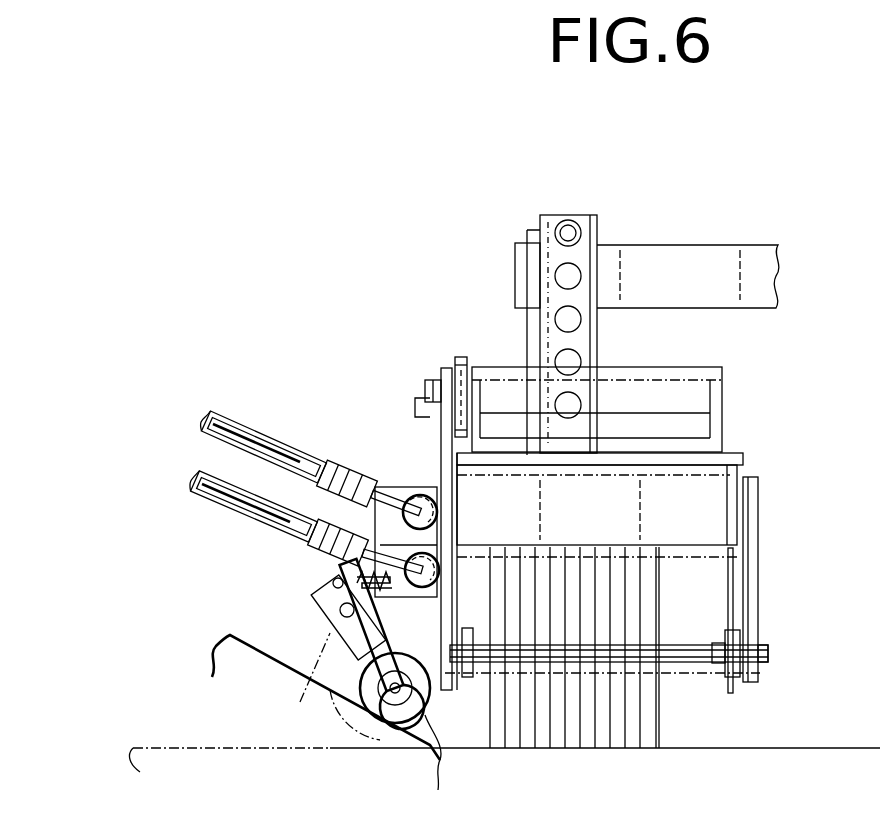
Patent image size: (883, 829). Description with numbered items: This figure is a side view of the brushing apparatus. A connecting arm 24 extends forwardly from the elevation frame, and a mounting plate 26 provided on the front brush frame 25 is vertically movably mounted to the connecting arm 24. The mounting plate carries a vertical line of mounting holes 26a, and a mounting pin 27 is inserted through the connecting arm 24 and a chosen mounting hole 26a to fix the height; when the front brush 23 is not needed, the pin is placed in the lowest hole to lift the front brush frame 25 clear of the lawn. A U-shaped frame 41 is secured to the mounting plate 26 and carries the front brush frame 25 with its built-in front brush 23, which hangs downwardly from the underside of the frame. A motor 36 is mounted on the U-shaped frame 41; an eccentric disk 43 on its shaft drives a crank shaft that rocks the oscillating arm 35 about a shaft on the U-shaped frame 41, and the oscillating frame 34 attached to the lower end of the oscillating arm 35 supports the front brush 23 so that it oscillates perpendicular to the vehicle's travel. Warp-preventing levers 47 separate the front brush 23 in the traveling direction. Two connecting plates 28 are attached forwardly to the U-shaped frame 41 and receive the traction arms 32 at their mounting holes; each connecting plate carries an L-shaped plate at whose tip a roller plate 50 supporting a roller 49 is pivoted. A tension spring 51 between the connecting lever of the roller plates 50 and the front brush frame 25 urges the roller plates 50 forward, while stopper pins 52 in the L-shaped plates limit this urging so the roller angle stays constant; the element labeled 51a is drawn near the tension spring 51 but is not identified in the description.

The front brush 23 is at (662, 730).
The connecting arm 24 is at (708, 258).
The front brush frame 25 is at (710, 527).
The mounting plate 26 is at (594, 216).
The mounting holes 26a is at (574, 322).
The mounting pin 27 is at (568, 228).
The connecting plates 28 is at (408, 481).
The traction arms 32 is at (228, 433).
The oscillating frame 34 is at (733, 680).
The oscillating arm 35 is at (732, 592).
The motor 36 is at (697, 432).
The U-shaped frame 41 is at (743, 460).
The eccentric disk 43 is at (461, 357).
The warp-preventing levers 47 is at (694, 665).
The roller 49 is at (433, 724).
The roller plate 50 is at (333, 670).
The tension spring 51 is at (377, 473).
The mounting plate 51a is at (311, 608).
The stopper pins 52 is at (382, 700).